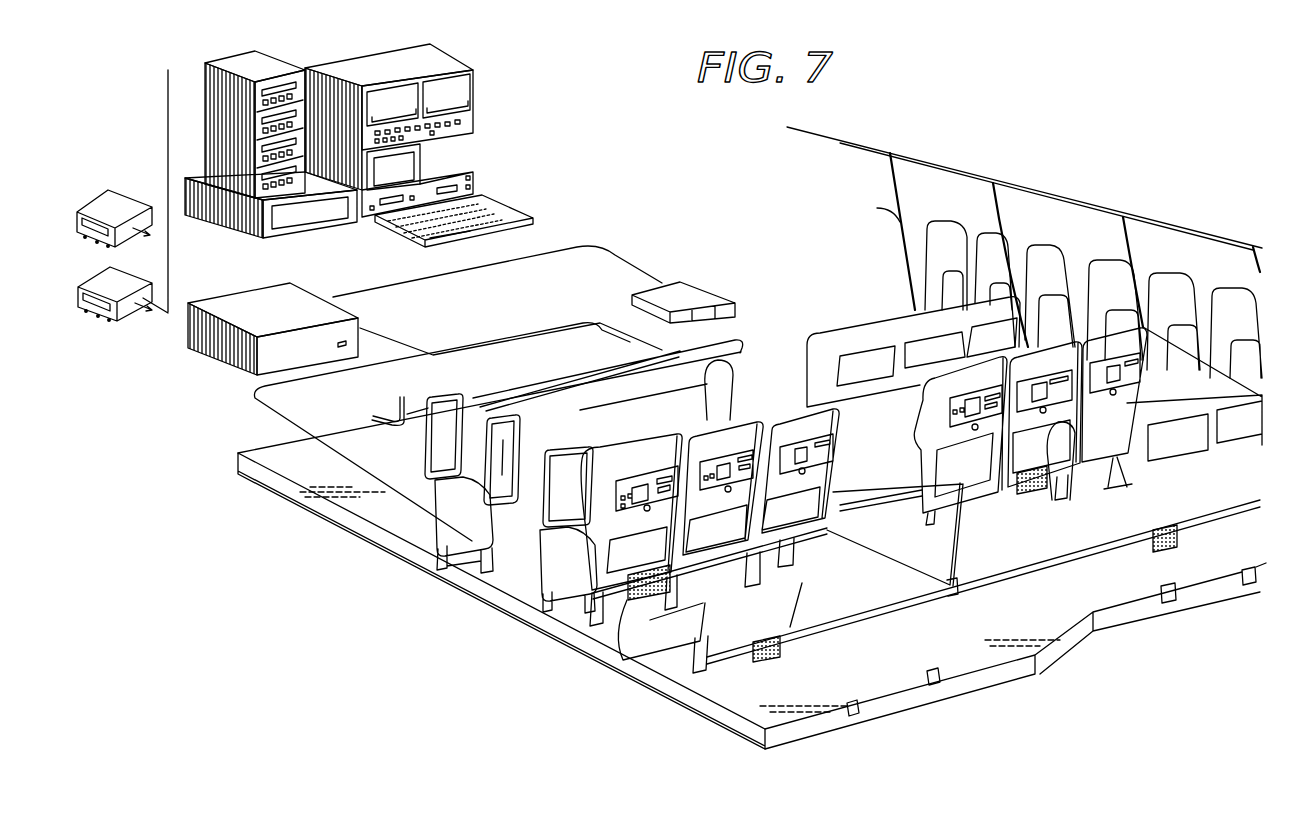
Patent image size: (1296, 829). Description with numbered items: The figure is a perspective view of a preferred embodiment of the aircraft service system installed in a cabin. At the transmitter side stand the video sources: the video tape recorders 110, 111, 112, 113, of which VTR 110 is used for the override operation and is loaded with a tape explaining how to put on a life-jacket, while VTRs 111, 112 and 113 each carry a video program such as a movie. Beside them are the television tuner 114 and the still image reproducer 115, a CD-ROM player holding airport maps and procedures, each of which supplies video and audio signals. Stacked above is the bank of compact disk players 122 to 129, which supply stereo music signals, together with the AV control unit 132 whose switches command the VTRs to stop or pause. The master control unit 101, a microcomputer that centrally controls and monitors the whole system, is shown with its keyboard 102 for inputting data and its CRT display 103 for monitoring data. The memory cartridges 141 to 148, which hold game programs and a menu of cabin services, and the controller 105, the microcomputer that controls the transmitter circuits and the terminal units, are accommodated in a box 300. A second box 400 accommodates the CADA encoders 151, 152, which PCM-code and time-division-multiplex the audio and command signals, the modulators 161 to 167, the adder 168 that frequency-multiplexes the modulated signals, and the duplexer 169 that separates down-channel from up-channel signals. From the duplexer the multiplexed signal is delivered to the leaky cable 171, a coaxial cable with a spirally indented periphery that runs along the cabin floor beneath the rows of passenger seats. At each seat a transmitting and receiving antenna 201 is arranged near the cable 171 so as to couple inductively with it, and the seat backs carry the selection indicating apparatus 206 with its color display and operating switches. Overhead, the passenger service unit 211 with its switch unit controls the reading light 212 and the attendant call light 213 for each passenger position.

The video tape recorder 110 is at (223, 63).
The video tape recorder 111 is at (215, 104).
The video tape recorder 112 is at (215, 136).
The video tape recorder 113 is at (220, 166).
The television tuner 114 is at (103, 202).
The still image reproducer 115 is at (113, 280).
The compact disk player 122 is at (416, 109).
The compact disk player 129 is at (368, 72).
The AV control unit 132 is at (463, 127).
The CRT display 103 is at (400, 163).
The master control unit 101 is at (470, 192).
The keyboard 102 is at (513, 213).
The memory unit 141 is at (267, 225).
The RAM cartridge 148 is at (267, 225).
The controller 105 is at (221, 218).
The box 300 is at (352, 153).
The box 400 is at (227, 312).
The CADA encoder 151 is at (419, 393).
The CADA encoder 152 is at (419, 393).
The modulator 161 is at (419, 393).
The modulator 167 is at (419, 393).
The adder 168 is at (419, 393).
The duplexer 169 is at (419, 393).
The passenger service unit 211 is at (724, 275).
The reading light 212 is at (724, 275).
The attendant call light 213 is at (688, 290).
The transmitting and receiving antenna 201 is at (630, 617).
The selection indicating apparatus 206 is at (620, 515).
The leaky cable 171 is at (860, 707).